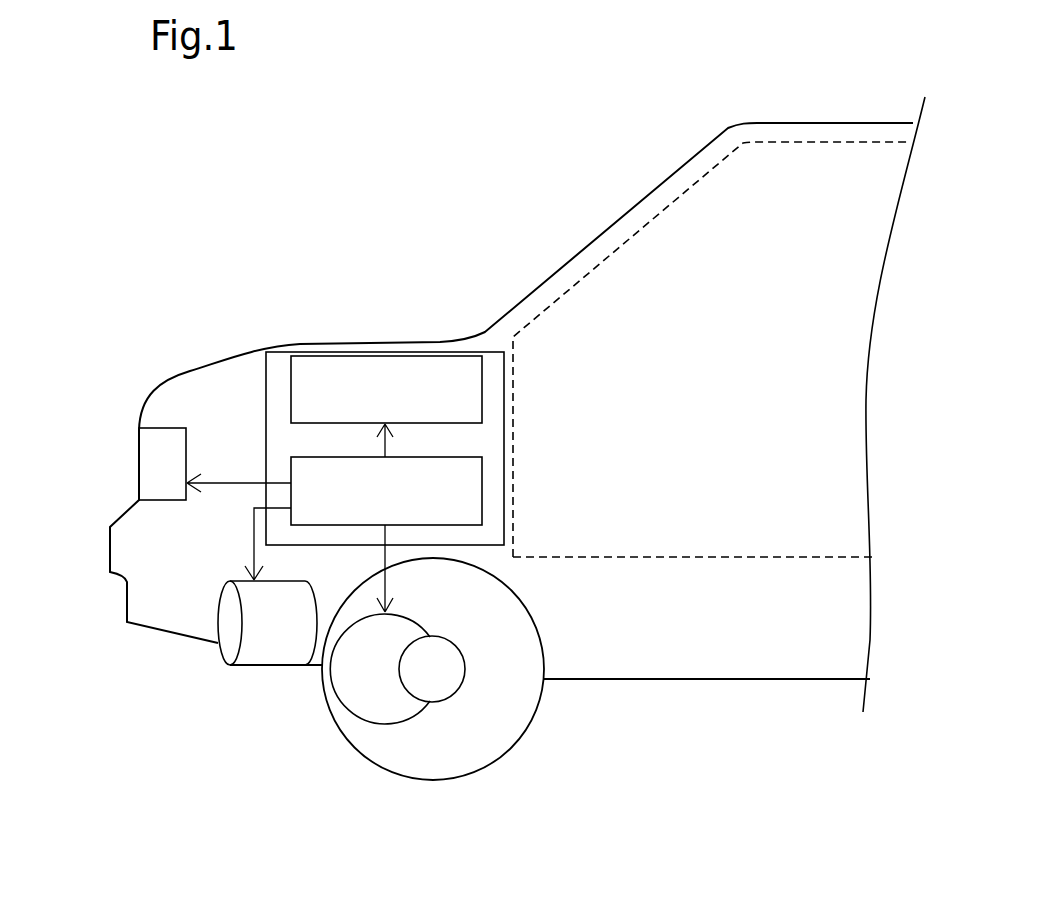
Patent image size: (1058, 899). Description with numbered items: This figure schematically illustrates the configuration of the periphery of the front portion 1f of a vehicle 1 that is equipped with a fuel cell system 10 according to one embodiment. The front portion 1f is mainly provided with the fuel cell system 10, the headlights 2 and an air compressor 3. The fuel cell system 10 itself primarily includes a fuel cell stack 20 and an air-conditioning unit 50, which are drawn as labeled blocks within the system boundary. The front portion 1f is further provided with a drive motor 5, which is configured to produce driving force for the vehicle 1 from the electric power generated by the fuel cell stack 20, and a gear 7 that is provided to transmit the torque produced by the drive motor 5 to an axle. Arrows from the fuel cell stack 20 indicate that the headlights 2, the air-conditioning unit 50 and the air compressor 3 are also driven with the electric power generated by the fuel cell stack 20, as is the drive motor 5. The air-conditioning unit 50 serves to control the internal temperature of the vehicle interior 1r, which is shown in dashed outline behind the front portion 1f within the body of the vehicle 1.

The vehicle 1 is at (605, 185).
The front portion 1f is at (323, 290).
The vehicle interior 1r is at (733, 557).
The headlights 2 is at (158, 470).
The air compressor 3 is at (268, 668).
The drive motor 5 is at (348, 712).
The gear 7 is at (466, 682).
The fuel cell system 10 is at (513, 440).
The fuel cell stack 20 is at (482, 480).
The air-conditioning unit 50 is at (482, 382).